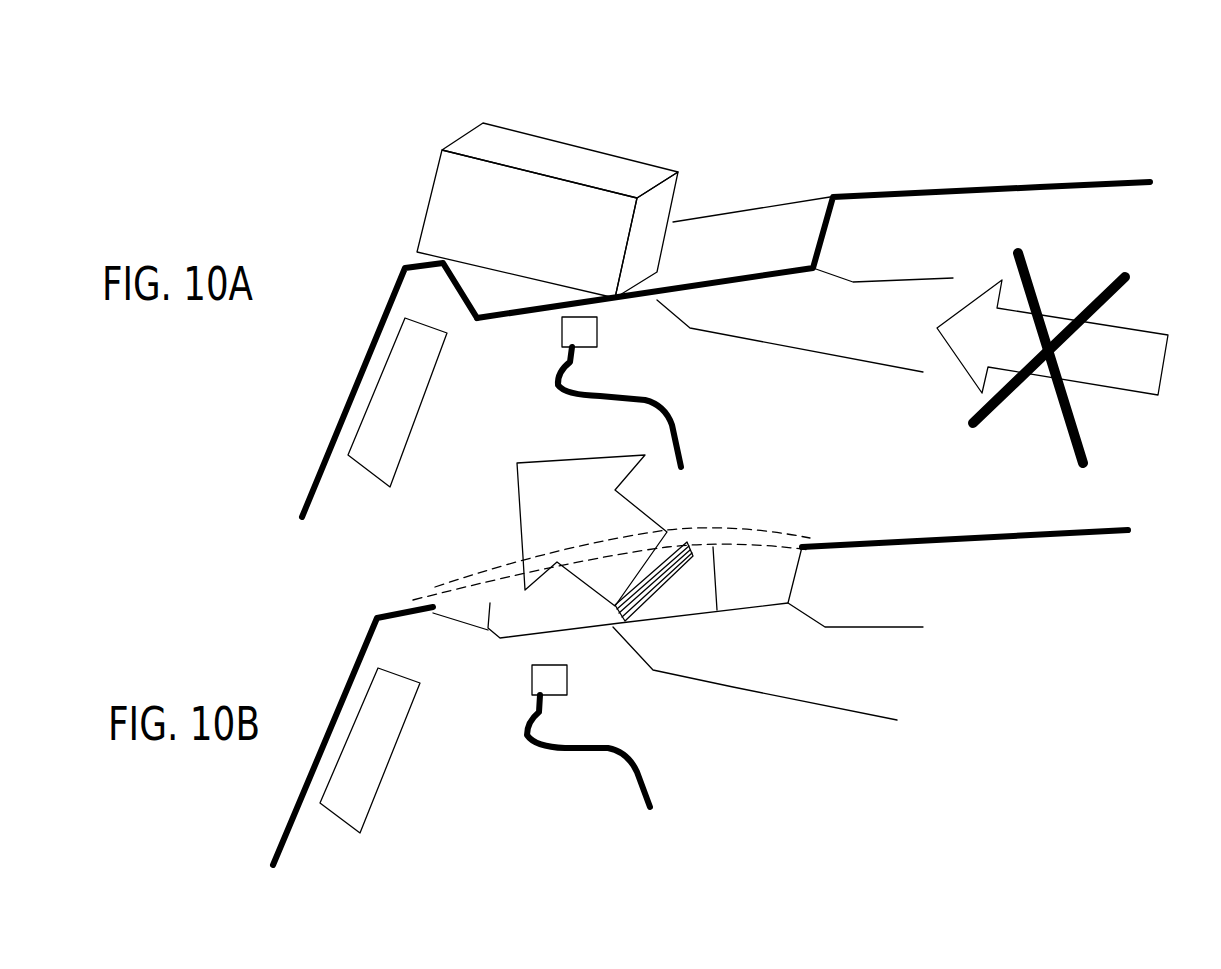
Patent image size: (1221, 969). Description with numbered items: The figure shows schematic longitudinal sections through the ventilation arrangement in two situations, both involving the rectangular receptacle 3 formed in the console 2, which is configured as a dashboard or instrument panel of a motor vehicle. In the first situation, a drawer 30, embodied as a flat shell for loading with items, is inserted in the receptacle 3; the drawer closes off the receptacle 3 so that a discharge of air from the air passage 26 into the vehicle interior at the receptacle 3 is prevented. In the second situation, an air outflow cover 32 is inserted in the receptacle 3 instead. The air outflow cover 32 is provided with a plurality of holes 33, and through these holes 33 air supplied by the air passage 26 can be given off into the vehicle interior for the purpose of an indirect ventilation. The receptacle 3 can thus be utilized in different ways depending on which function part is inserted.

In FIG. 10A, the console 2 is at (1008, 183).
In FIG. 10B, the console 2 is at (875, 535).
In FIG. 10A, the receptacle 3 is at (507, 318).
In FIG. 10B, the receptacle 3 is at (490, 603).
In FIG. 10A, the air passage 26 is at (835, 330).
In FIG. 10B, the air passage 26 is at (798, 667).
In FIG. 10A, the drawer 30 is at (823, 227).
In FIG. 10B, the air outflow cover 32 is at (738, 538).
In FIG. 10B, the holes 33 is at (757, 547).